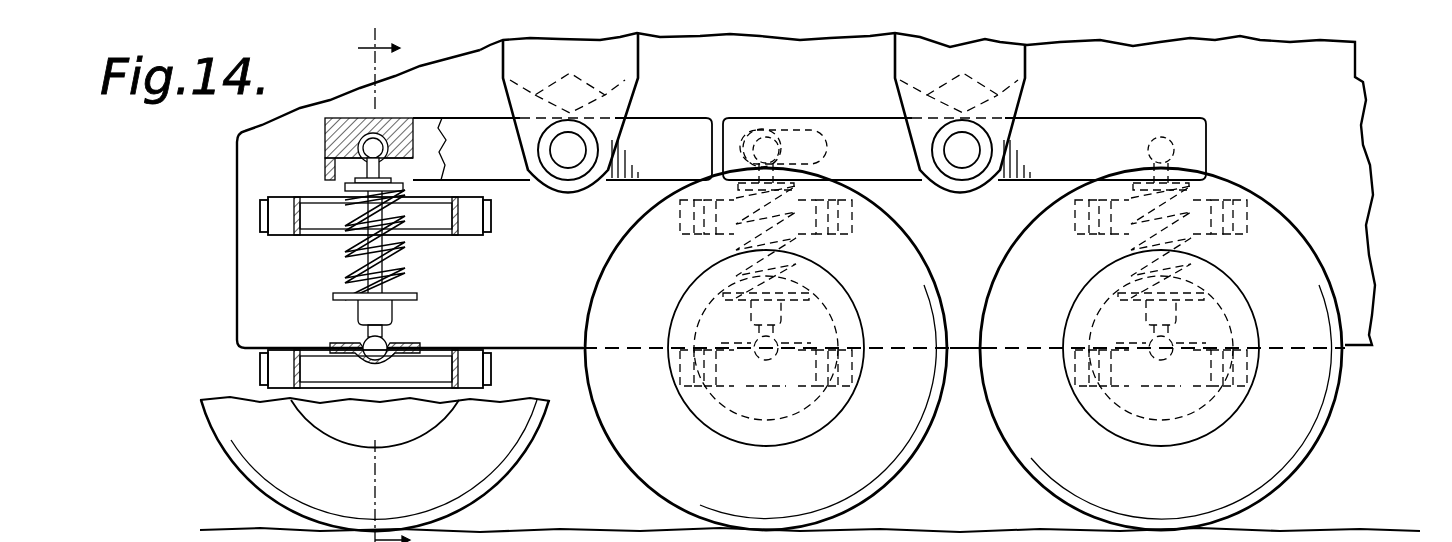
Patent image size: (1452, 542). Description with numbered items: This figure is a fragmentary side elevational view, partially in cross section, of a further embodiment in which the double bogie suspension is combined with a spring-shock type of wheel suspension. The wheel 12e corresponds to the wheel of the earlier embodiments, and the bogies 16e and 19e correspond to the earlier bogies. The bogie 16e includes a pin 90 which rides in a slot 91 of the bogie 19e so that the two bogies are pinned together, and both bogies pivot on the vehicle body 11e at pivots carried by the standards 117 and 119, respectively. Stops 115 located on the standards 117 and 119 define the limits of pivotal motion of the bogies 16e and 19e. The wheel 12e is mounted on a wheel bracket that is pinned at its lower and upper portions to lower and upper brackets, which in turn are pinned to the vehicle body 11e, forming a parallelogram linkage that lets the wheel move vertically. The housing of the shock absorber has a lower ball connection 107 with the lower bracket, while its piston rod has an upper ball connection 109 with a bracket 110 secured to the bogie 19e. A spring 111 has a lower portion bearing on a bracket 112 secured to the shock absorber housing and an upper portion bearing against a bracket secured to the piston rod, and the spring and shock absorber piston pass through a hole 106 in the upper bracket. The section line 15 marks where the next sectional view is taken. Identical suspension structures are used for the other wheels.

The vehicle body 11e is at (1362, 122).
The wheel 12e is at (248, 462).
The section line 15 is at (400, 285).
The bogie 16e is at (1206, 135).
The bogie 19e is at (484, 118).
The pin 90 is at (790, 100).
The slot 91 is at (800, 134).
The hole 106 is at (345, 205).
The lower ball connection 107 is at (358, 340).
The upper ball connection 109 is at (382, 128).
The bracket 110 is at (325, 140).
The spring 111 is at (345, 268).
The bracket 112 is at (333, 296).
The stops 115 is at (764, 80).
The standard 117 is at (1025, 57).
The standard 119 is at (638, 57).